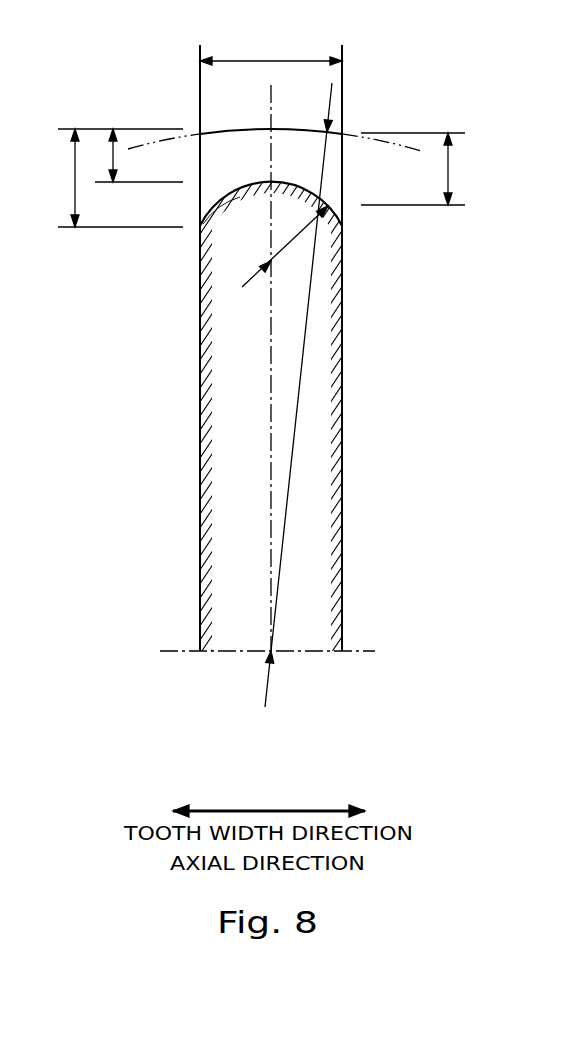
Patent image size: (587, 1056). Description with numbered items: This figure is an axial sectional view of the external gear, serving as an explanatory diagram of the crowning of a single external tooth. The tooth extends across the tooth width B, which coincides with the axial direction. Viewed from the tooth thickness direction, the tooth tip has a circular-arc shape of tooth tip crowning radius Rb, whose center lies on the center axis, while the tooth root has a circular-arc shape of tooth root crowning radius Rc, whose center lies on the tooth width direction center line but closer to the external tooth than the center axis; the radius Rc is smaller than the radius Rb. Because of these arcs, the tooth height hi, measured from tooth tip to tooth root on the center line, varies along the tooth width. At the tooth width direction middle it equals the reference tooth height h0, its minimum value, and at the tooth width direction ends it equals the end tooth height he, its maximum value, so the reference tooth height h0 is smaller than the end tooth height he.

The tooth width B is at (271, 51).
The end tooth height he is at (111, 178).
The reference tooth height h0 is at (134, 155).
The tooth height hi is at (419, 169).
The tooth root crowning radius Rc is at (272, 260).
The tooth tip crowning radius Rb is at (291, 413).